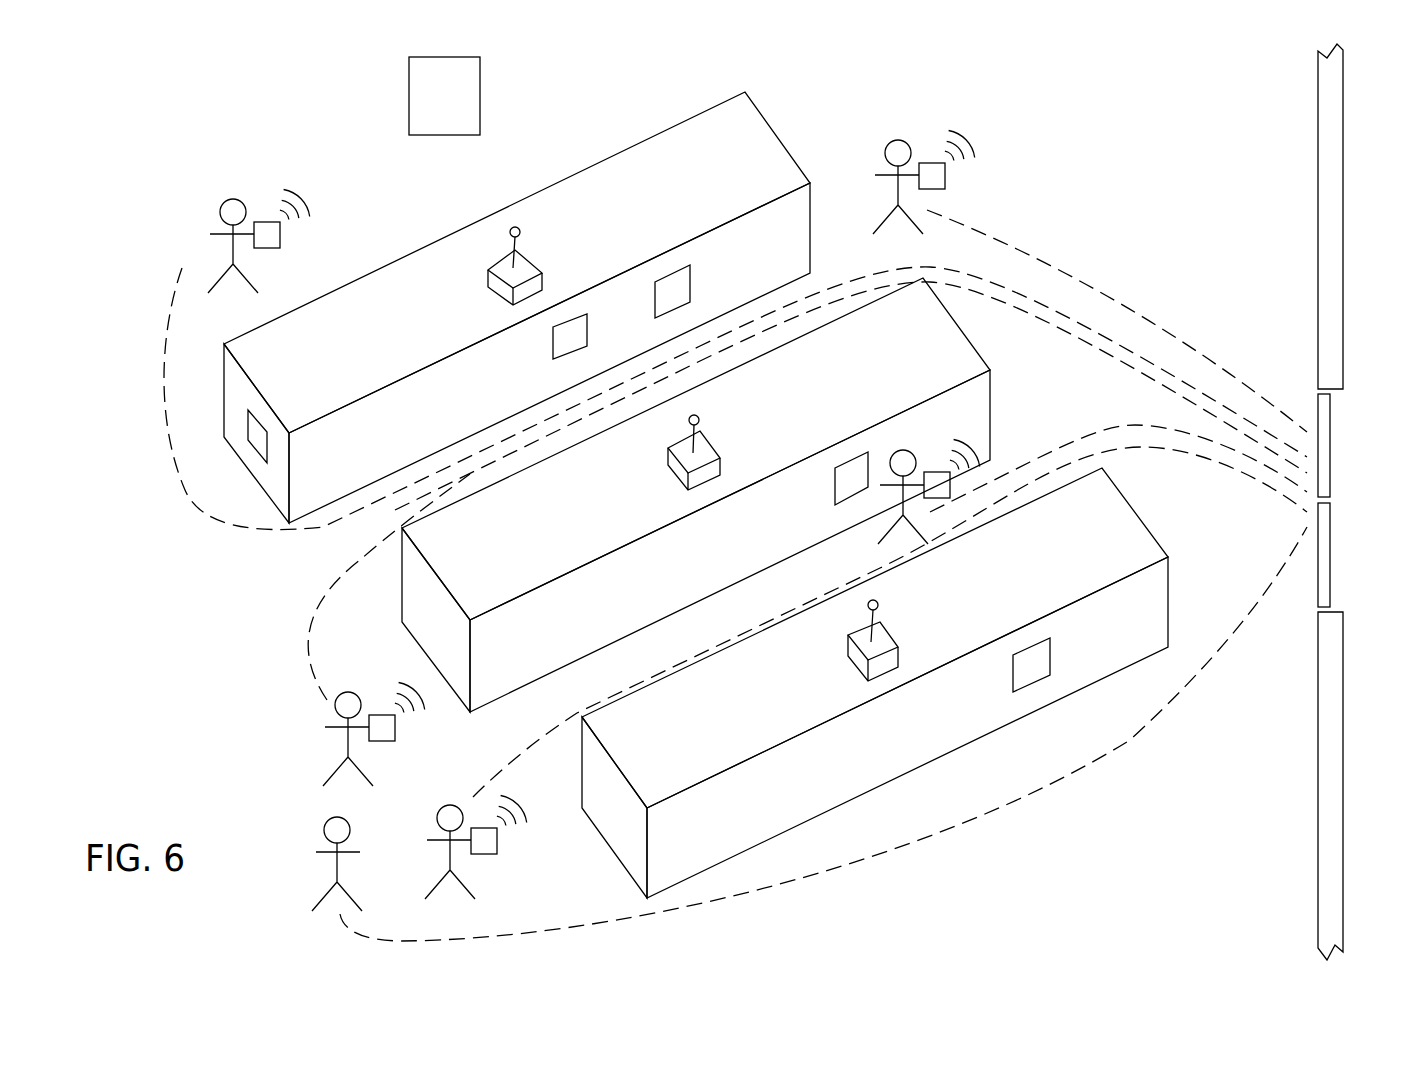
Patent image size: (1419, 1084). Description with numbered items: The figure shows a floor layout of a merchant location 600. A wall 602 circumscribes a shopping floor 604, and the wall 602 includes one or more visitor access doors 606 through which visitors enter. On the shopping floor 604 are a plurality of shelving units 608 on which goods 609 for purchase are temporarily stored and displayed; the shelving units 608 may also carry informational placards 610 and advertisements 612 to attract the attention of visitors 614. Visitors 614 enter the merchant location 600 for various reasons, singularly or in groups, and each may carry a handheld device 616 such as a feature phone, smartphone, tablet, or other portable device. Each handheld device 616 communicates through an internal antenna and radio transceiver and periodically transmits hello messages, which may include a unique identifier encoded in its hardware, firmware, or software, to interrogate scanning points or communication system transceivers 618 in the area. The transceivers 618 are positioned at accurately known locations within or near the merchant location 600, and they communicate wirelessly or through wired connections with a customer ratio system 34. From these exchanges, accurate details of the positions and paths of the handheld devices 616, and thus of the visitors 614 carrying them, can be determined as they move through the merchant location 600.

The customer ratio system 34 is at (455, 107).
The merchant location 600 is at (1115, 102).
The wall 602 is at (1333, 238).
The shopping floor 604 is at (258, 609).
The visitor access door 606 is at (1350, 424).
The shelving unit 608 is at (368, 354).
The goods 609 is at (680, 287).
The informational placard 610 is at (250, 438).
The advertisement 612 is at (578, 335).
The visitor 614 is at (262, 184).
The handheld device 616 is at (281, 241).
The transceiver 618 is at (535, 258).